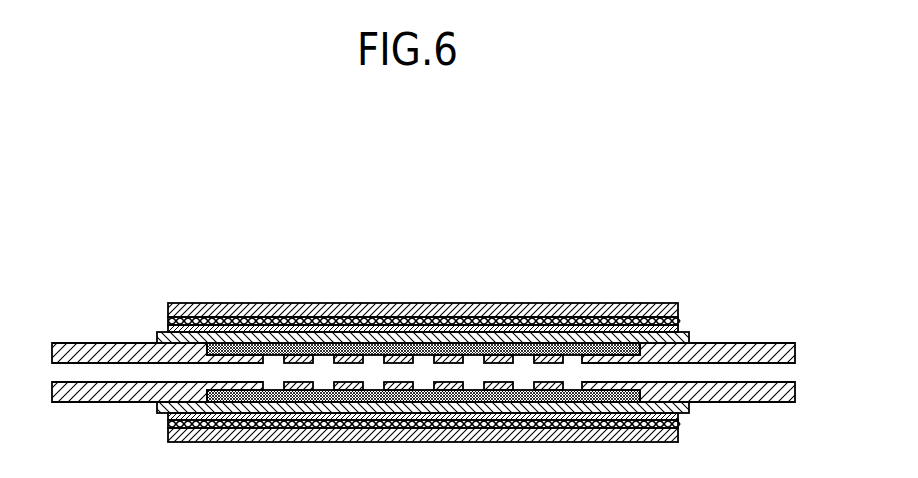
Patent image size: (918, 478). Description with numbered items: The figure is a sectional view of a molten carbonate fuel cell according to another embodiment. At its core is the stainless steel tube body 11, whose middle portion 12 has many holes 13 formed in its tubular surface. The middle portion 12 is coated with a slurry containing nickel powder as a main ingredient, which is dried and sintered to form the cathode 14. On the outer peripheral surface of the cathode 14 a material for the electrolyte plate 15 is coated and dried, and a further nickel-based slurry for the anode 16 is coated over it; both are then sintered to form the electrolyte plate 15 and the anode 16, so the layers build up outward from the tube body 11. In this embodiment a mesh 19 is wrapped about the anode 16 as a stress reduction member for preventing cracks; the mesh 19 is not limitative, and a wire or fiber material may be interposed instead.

The stainless steel tube body 11 is at (108, 343).
The middle portion 12 is at (350, 355).
The holes 13 is at (520, 358).
The cathode 14 is at (427, 350).
The electrolyte plate 15 is at (547, 340).
The anode 16 is at (603, 308).
The mesh 19 is at (573, 319).